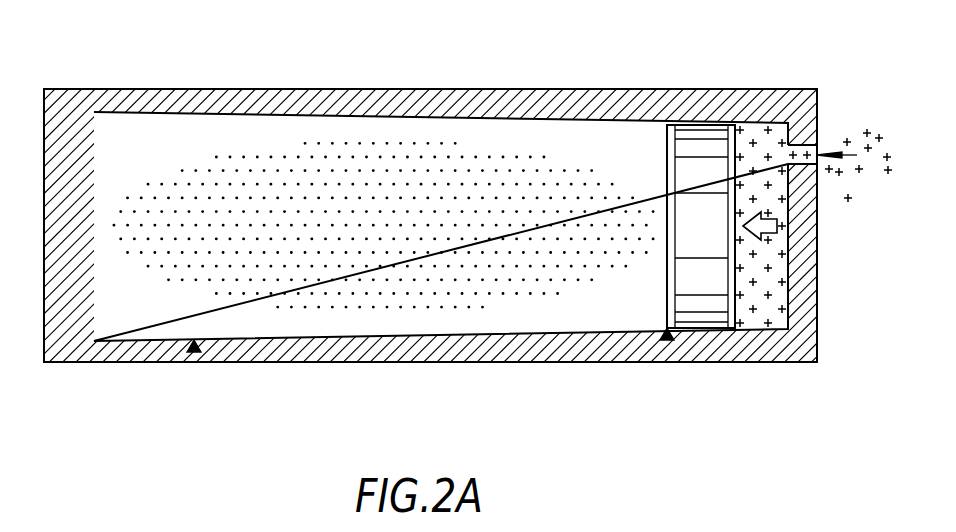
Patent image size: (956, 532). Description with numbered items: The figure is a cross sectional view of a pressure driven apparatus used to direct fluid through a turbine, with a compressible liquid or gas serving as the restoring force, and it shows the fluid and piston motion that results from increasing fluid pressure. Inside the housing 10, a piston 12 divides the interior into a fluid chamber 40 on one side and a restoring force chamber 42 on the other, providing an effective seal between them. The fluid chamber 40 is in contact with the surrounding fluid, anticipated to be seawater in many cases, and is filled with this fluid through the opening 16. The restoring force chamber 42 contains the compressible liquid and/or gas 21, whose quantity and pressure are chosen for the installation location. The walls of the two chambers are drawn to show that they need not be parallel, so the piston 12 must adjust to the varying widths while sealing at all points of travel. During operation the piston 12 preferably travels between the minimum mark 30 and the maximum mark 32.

The housing 10 is at (580, 88).
The piston 12 is at (702, 134).
The opening 16 is at (818, 153).
The compressible liquid and/or gas 21 is at (421, 152).
The minimum mark 30 is at (667, 340).
The maximum mark 32 is at (193, 352).
The fluid chamber 40 is at (752, 134).
The restoring force chamber 42 is at (248, 135).